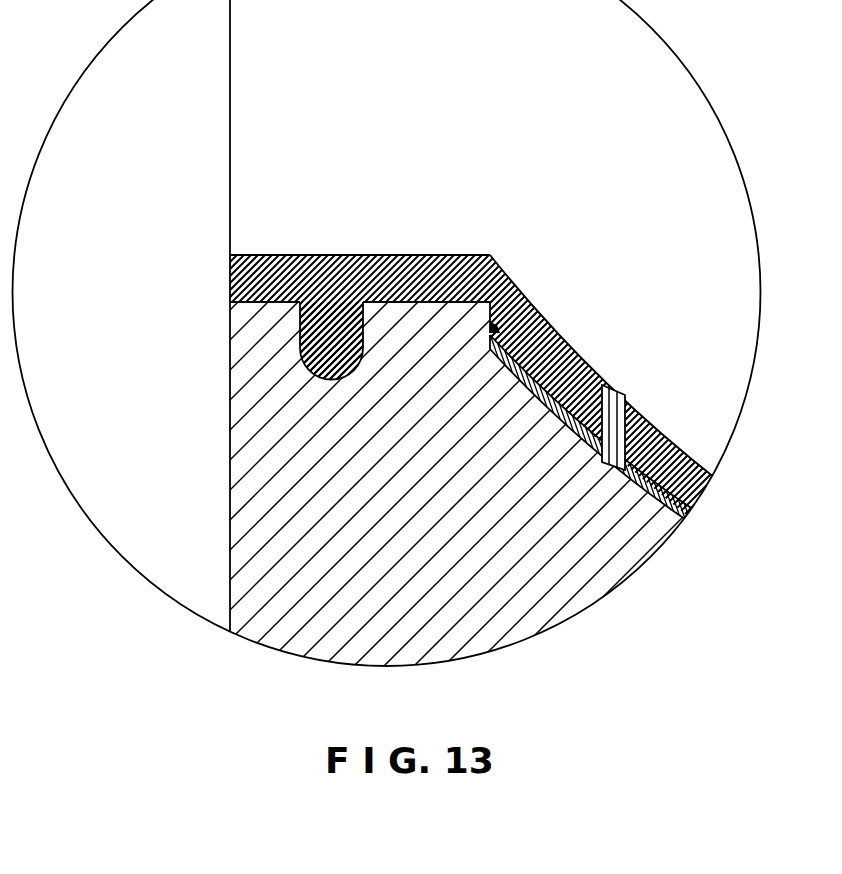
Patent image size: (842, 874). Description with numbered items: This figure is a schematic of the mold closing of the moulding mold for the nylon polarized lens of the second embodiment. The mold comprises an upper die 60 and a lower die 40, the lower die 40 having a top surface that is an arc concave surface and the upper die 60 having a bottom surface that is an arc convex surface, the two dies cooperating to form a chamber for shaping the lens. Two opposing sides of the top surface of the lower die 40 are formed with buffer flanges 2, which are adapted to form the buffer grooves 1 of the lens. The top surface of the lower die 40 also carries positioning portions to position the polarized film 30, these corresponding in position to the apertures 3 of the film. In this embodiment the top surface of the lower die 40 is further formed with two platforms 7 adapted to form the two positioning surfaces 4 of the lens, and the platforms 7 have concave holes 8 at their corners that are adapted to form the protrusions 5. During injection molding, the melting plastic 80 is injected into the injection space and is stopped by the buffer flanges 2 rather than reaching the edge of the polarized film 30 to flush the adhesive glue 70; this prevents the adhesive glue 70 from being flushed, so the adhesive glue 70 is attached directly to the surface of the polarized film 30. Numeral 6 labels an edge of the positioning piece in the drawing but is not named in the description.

The buffer groove 1 is at (500, 348).
The buffer flange 2 is at (500, 290).
The aperture 3 is at (604, 386).
The positioning surface 4 is at (280, 262).
The protrusion 5 is at (303, 317).
The insert edge 6 is at (627, 393).
The platform 7 is at (232, 300).
The concave hole 8 is at (302, 338).
The polarized film 30 is at (680, 515).
The lower die 40 is at (275, 471).
The upper die 60 is at (248, 137).
The adhesive glue 70 is at (700, 490).
The melting plastic 80 is at (527, 313).